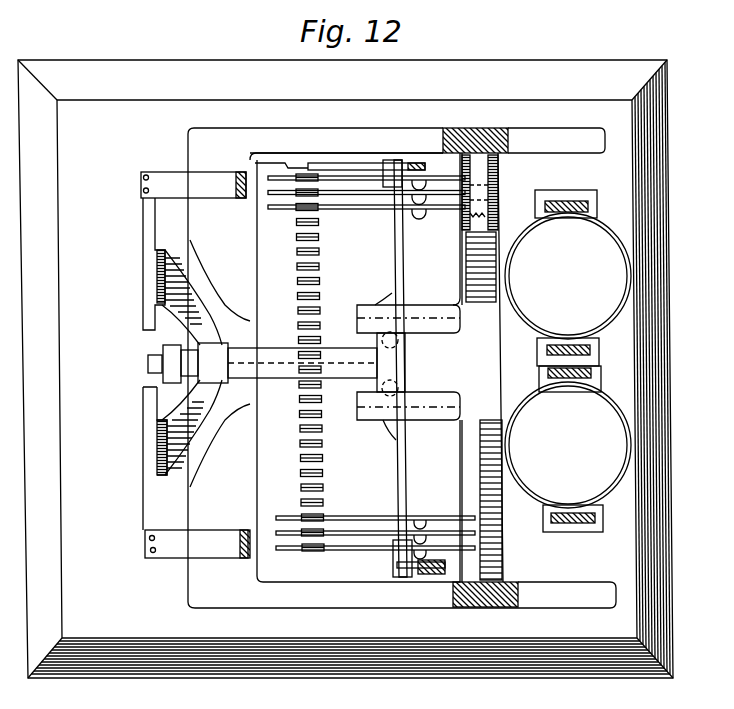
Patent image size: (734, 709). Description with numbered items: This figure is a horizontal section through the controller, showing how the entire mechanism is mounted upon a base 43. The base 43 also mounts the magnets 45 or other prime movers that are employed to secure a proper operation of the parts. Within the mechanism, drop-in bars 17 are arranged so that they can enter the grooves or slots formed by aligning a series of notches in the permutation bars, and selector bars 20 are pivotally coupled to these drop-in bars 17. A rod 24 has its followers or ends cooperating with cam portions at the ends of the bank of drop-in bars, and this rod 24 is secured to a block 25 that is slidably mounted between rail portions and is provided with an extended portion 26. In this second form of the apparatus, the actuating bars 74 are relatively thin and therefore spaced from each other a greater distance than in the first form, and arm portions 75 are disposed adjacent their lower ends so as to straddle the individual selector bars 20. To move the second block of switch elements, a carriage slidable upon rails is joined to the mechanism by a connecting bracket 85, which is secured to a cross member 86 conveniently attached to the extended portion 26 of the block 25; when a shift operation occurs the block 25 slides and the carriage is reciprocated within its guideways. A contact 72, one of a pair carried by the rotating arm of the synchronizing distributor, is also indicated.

The base 43 is at (615, 152).
The connecting bracket 85 is at (234, 199).
The cross member 86 is at (165, 249).
The actuating bars 74 is at (299, 239).
The arm portions 75 is at (299, 432).
The selector bars 20 is at (349, 210).
The drop-in bars 17 is at (427, 213).
The rod 24 is at (404, 272).
The block 25 is at (400, 366).
The extended portion 26 is at (265, 377).
The magnets 45 is at (568, 361).
The contact 72 is at (435, 576).